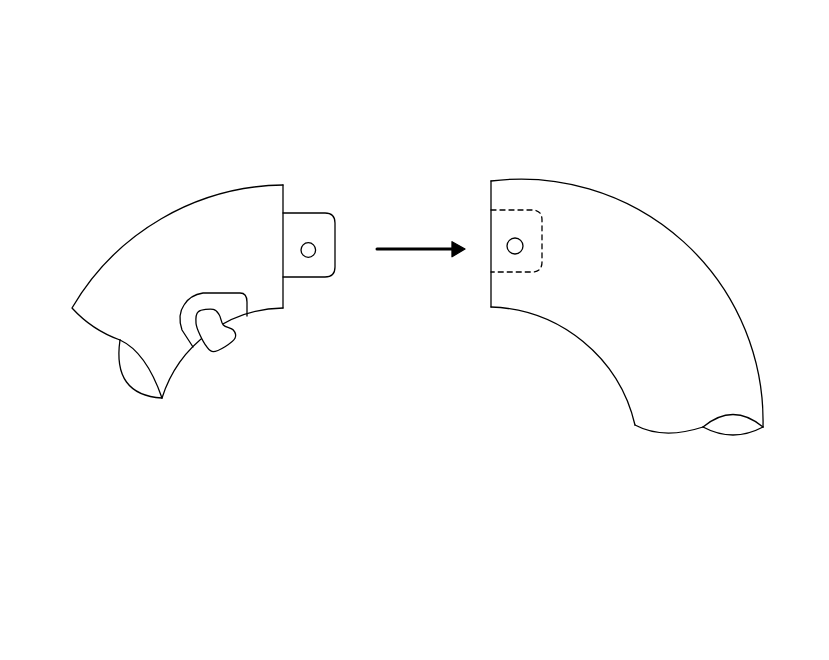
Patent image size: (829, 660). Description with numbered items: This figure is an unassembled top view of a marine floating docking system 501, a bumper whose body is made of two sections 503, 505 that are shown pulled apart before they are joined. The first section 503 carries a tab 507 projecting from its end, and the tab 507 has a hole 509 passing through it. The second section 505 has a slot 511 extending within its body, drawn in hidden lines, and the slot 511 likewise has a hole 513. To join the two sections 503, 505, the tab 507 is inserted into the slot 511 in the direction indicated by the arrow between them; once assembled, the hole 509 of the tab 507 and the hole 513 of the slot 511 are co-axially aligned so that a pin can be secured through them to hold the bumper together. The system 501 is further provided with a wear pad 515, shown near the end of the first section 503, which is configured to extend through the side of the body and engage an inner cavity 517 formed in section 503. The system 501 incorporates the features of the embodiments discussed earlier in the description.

The system 501 is at (107, 55).
The first body section 503 is at (140, 232).
The second body section 505 is at (663, 230).
The tab 507 is at (308, 213).
The hole of the tab 509 is at (315, 255).
The slot 511 is at (500, 272).
The hole of the slot 513 is at (518, 239).
The wear pad 515 is at (223, 350).
The inner cavity 517 is at (240, 307).